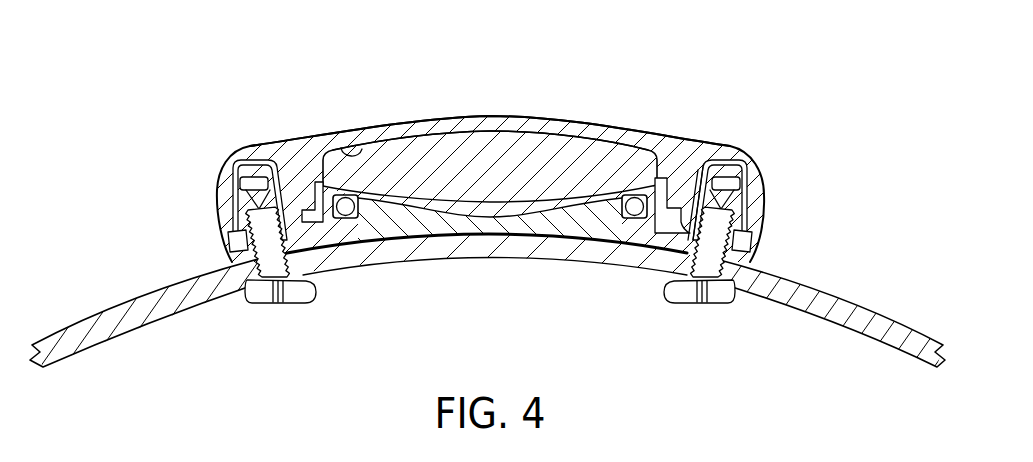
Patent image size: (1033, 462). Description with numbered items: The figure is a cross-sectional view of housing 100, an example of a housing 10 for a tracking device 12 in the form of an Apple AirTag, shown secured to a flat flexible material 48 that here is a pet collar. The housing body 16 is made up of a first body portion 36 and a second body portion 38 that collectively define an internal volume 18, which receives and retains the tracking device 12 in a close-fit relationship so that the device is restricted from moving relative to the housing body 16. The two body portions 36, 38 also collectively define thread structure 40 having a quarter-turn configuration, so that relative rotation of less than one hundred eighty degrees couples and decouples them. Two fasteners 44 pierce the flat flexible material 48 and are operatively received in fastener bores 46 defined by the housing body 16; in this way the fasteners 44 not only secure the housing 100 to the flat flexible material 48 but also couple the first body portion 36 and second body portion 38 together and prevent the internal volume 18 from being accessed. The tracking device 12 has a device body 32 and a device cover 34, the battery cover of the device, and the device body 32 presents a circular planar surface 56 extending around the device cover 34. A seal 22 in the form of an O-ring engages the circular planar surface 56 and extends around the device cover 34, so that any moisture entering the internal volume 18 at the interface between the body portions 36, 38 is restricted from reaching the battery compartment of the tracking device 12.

The housing 10 is at (746, 35).
The housing 100 is at (738, 71).
The tracking device 12 is at (512, 135).
The housing body 16 is at (422, 121).
The internal volume 18 is at (338, 158).
The seal 22 is at (636, 180).
The device body 32 is at (535, 133).
The device cover 34 is at (492, 228).
The first body portion 36 is at (296, 139).
The second body portion 38 is at (588, 240).
The thread structure 40 is at (688, 150).
The fastener 44 is at (268, 305).
The fastener bore 46 is at (247, 163).
The flat flexible material 48 is at (841, 300).
The circular planar surface 56 is at (340, 217).